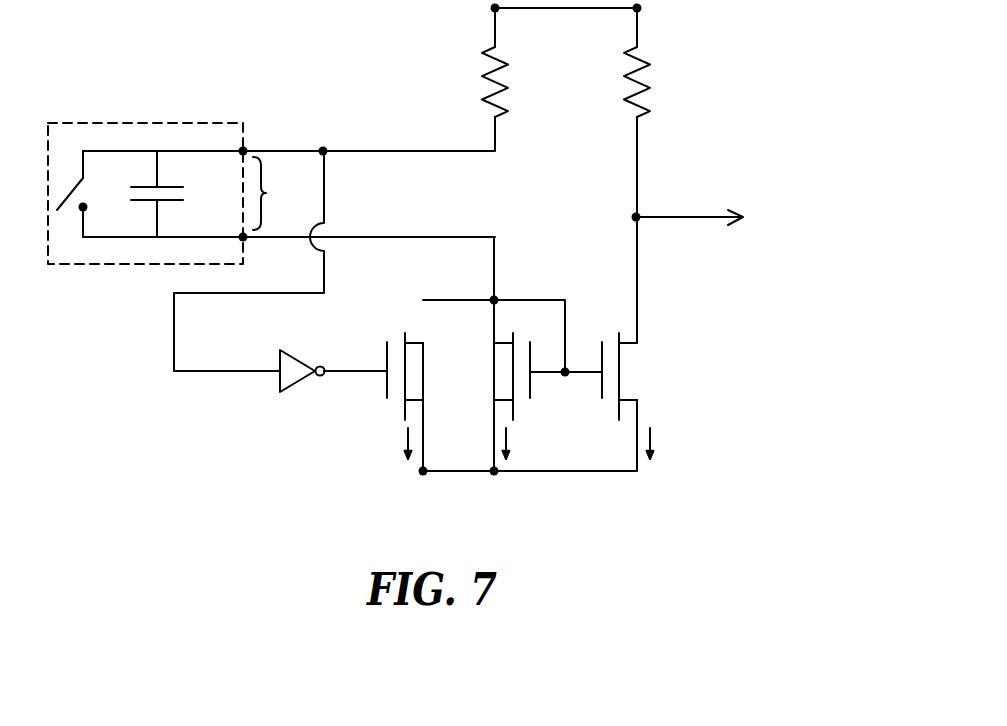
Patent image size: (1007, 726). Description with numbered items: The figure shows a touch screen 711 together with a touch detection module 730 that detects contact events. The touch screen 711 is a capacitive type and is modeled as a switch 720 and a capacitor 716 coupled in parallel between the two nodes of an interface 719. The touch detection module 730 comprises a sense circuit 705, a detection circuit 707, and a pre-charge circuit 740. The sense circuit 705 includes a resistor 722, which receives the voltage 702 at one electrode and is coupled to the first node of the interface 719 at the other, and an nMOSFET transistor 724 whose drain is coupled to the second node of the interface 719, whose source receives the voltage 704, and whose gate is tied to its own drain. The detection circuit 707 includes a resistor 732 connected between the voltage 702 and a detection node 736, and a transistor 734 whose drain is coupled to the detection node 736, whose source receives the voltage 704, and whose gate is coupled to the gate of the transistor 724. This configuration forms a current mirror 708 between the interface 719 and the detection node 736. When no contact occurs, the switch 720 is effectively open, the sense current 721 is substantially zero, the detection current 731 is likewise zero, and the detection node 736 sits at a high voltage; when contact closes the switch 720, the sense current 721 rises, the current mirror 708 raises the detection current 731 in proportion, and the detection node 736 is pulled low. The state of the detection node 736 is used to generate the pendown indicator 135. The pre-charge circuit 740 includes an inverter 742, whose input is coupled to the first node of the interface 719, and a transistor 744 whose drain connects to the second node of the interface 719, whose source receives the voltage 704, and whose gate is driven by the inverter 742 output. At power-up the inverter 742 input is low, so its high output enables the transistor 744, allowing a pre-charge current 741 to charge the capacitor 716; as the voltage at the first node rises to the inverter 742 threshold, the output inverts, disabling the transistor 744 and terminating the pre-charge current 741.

The touch detection module 730 is at (346, 88).
The voltage Vdd 702 is at (458, 25).
The resistor 722 is at (510, 77).
The resistor 732 is at (647, 77).
The touch screen 711 is at (230, 139).
The switch 720 is at (85, 195).
The capacitor 716 is at (212, 185).
The interface 719 is at (278, 193).
The sense circuit 705 is at (505, 129).
The detection circuit 707 is at (622, 129).
The detection node 736 is at (643, 210).
The pendown indicator 135 is at (740, 210).
The current mirror 708 is at (572, 283).
The transistor 744 is at (378, 340).
The inverter 742 is at (285, 343).
The transistor 724 is at (498, 370).
The transistor 734 is at (632, 367).
The pre-charge circuit 740 is at (338, 404).
The pre-charge current 741 is at (400, 441).
The sense current 721 is at (517, 438).
The detection current 731 is at (660, 437).
The voltage Vss 704 is at (655, 503).